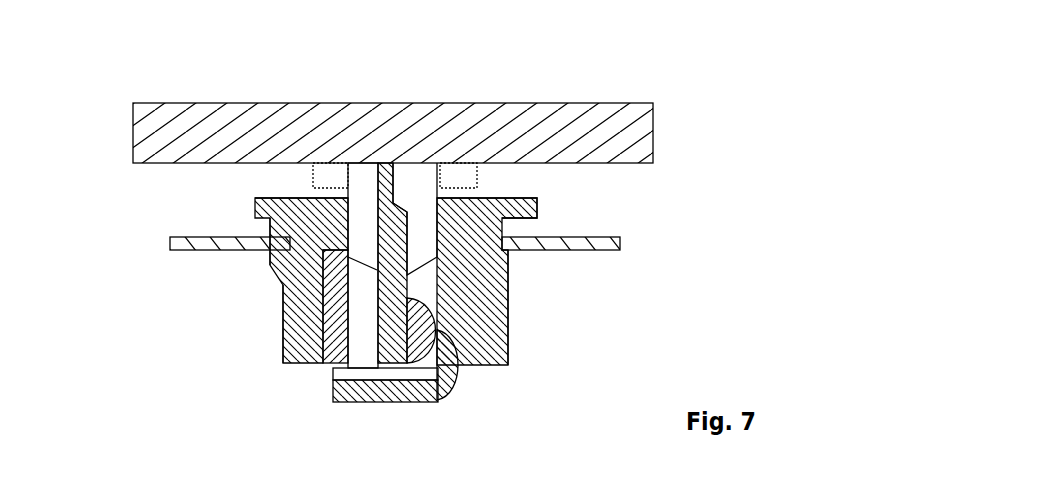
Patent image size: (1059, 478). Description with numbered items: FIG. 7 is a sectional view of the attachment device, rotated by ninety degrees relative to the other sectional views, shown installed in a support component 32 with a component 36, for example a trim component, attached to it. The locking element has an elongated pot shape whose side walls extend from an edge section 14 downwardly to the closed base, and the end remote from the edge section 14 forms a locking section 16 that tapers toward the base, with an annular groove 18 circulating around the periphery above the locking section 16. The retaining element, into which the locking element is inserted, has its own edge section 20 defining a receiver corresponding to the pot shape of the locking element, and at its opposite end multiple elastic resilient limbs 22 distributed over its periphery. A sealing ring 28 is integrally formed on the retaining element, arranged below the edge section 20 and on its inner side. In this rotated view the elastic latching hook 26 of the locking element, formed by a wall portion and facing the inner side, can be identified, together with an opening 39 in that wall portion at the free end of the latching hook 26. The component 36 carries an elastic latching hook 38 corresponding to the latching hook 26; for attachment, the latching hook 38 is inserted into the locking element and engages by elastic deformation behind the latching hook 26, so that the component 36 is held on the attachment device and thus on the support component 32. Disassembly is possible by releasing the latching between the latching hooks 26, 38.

The edge section 14 is at (433, 264).
The locking section 16 is at (333, 379).
The annular groove 18 is at (333, 316).
The edge section 20 is at (527, 210).
The elastic resilient limbs 22 is at (497, 337).
The latching hook 26 is at (428, 303).
The sealing ring 28 is at (282, 232).
The support component 32 is at (202, 243).
The component 36 is at (250, 118).
The elastic latching hook 38 is at (420, 340).
The opening 39 is at (457, 330).